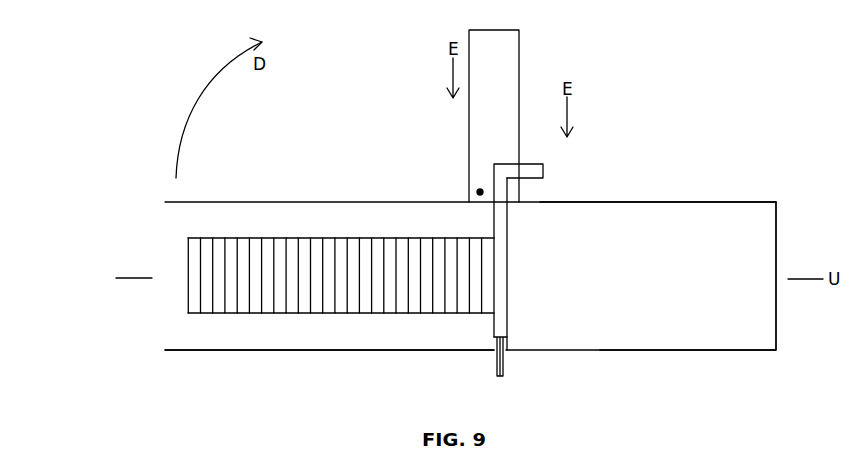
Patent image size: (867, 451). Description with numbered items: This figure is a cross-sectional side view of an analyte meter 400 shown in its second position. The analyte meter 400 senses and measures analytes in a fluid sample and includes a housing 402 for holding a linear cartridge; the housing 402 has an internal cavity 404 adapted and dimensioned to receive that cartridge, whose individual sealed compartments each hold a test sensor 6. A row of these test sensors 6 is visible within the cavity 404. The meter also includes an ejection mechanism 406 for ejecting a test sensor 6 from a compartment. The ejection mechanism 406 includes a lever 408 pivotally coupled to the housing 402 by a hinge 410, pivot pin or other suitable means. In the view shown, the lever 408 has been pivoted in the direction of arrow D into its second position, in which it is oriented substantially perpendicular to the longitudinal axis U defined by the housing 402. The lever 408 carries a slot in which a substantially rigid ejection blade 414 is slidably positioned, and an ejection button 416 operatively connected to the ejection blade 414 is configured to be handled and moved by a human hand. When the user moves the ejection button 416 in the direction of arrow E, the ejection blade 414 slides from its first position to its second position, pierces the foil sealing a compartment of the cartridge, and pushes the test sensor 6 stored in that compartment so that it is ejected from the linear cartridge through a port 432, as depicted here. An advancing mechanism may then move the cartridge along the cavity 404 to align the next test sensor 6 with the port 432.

The analyte meter 400 is at (752, 80).
The housing 402 is at (752, 352).
The internal cavity 404 is at (242, 366).
The ejection mechanism 406 is at (622, 44).
The lever 408 is at (523, 58).
The hinge 410 is at (478, 192).
The ejection blade 414 is at (507, 226).
The ejection button 416 is at (543, 172).
The port 432 is at (507, 330).
The test sensor 6 is at (368, 307).